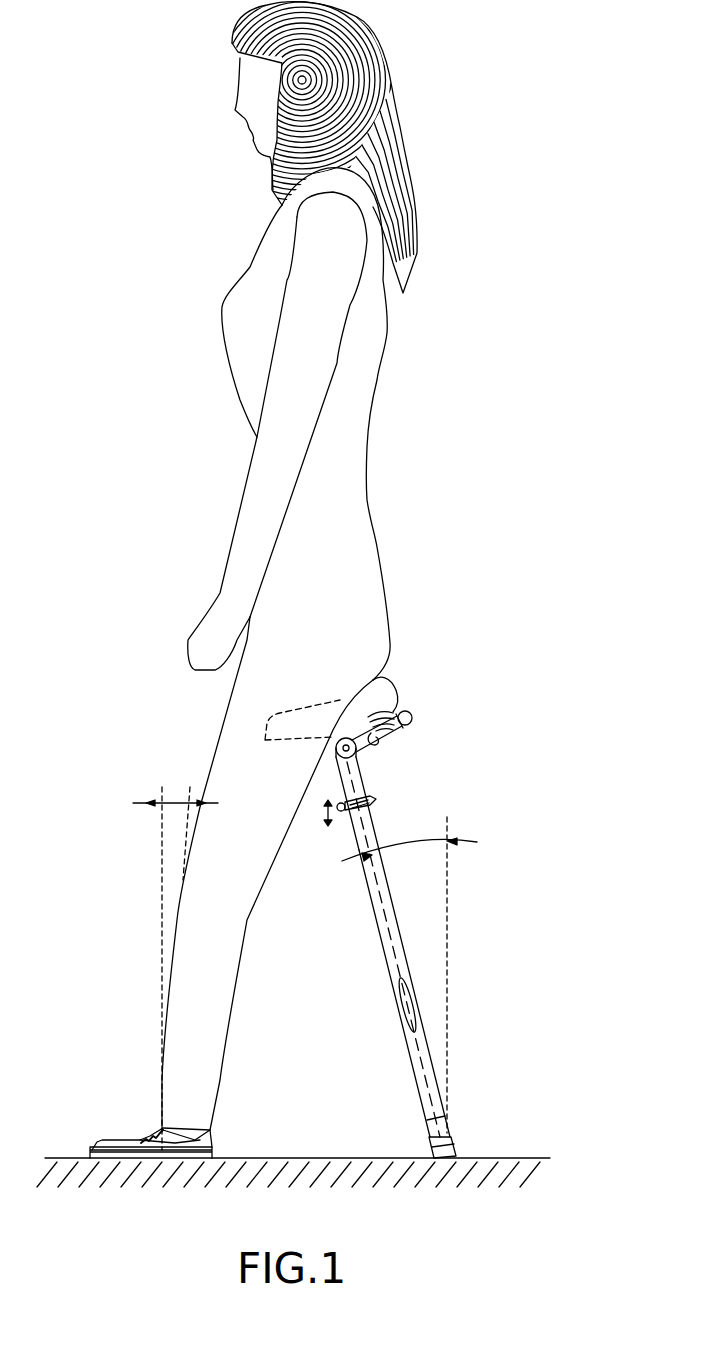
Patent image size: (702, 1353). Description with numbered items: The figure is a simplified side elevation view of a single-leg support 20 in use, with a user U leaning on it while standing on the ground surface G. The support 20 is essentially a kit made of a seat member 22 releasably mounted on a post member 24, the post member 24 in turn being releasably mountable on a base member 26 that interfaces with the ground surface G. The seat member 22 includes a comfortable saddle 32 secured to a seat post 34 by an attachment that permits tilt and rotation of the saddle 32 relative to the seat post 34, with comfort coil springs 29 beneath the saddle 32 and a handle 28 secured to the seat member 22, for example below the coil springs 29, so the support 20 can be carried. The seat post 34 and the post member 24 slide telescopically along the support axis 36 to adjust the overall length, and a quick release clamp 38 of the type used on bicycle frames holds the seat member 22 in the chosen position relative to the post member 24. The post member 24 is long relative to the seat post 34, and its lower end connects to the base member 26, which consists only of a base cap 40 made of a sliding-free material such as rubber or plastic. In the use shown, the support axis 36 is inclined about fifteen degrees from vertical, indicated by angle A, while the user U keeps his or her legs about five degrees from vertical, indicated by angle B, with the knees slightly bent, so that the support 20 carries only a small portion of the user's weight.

The single-leg support 20 is at (530, 810).
The seat member 22 is at (357, 776).
The post member 24 is at (425, 938).
The base member 26 is at (472, 1135).
The handle 28 is at (411, 721).
The comfort coil springs 29 is at (400, 713).
The saddle 32 is at (403, 693).
The seat post 34 is at (336, 786).
The support axis 36 is at (398, 978).
The quick release clamp 38 is at (377, 802).
The base cap 40 is at (432, 1146).
The user U is at (375, 382).
The angle A is at (410, 843).
The angle B is at (175, 803).
The ground surface G is at (513, 1158).